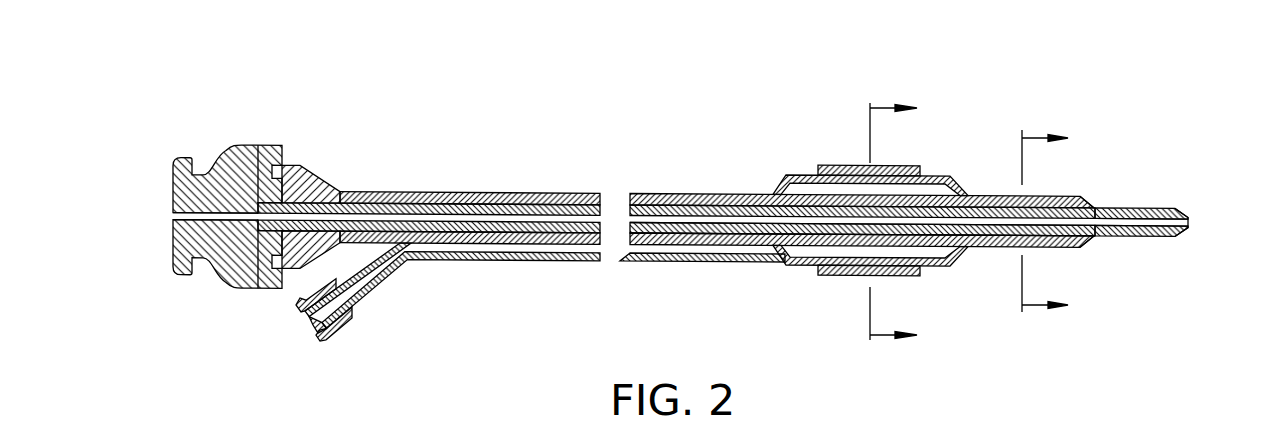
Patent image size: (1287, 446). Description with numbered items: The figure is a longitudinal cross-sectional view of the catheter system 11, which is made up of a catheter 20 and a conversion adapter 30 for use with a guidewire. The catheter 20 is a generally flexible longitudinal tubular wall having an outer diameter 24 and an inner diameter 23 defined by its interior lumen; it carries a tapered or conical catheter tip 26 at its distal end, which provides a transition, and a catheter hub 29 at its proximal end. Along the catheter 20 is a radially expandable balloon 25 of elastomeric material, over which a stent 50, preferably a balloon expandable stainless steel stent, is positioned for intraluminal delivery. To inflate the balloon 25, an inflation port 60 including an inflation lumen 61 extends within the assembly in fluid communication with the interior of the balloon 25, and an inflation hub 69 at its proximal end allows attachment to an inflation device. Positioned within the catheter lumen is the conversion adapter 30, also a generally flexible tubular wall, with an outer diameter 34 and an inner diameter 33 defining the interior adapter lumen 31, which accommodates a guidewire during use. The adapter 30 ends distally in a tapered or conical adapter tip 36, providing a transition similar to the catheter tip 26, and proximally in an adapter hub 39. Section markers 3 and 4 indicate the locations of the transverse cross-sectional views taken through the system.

The catheter system 11 is at (531, 140).
The catheter 20 is at (720, 193).
The inner diameter 23 is at (680, 205).
The outer diameter 24 is at (640, 193).
The balloon 25 is at (797, 175).
The catheter tip 26 is at (1088, 195).
The catheter hub 29 is at (300, 163).
The conversion adapter 30 is at (737, 240).
The adapter lumen 31 is at (172, 214).
The inner diameter 33 is at (690, 240).
The outer diameter 34 is at (645, 246).
The adapter tip 36 is at (1187, 212).
The adapter hub 39 is at (240, 145).
The stent 50 is at (826, 165).
The inflation port 60 is at (470, 259).
The inflation lumen 61 is at (307, 330).
The inflation hub 69 is at (342, 322).
The section line 3- 3 is at (1045, 225).
The section line 4- 4 is at (893, 223).